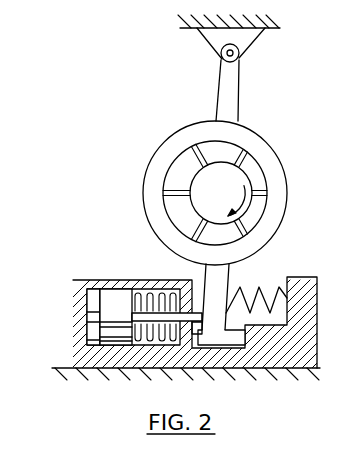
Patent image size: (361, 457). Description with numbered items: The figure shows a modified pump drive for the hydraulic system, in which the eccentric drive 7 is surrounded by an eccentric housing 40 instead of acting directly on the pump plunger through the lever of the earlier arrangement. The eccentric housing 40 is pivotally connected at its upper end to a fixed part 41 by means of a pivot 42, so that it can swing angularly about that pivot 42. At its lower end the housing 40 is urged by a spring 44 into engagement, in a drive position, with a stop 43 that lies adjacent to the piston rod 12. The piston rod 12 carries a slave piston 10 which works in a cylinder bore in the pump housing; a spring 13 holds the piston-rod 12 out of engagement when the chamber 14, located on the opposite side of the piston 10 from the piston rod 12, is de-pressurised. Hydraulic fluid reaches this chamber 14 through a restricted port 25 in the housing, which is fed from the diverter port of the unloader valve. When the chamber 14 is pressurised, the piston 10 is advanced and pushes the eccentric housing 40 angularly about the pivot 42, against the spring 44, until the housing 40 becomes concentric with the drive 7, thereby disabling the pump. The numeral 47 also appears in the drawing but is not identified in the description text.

The eccentric drive 7 is at (249, 198).
The slave piston 10 is at (115, 302).
The piston-rod 12 is at (150, 314).
The spring 13 is at (139, 340).
The chamber 14 is at (95, 332).
The restricted port 25 is at (93, 290).
The eccentric housing 40 is at (272, 167).
The fixed part 41 is at (254, 13).
The pivot 42 is at (241, 56).
The stop 43 is at (197, 346).
The spring 44 is at (281, 292).
The stop 47 is at (353, 246).